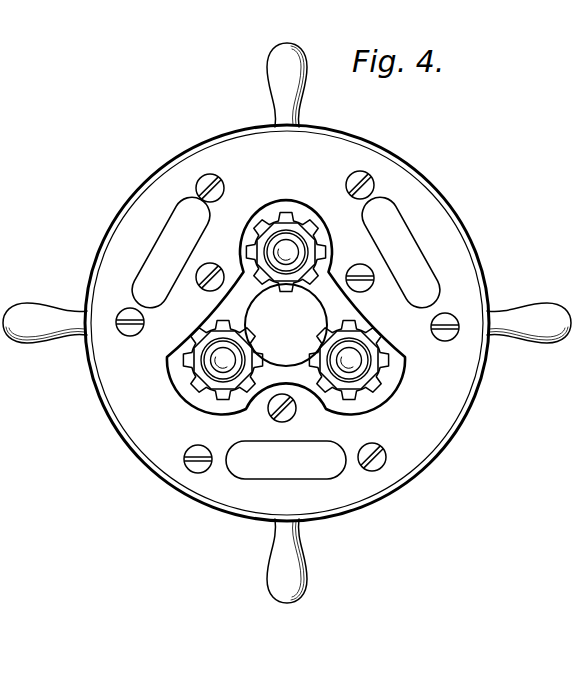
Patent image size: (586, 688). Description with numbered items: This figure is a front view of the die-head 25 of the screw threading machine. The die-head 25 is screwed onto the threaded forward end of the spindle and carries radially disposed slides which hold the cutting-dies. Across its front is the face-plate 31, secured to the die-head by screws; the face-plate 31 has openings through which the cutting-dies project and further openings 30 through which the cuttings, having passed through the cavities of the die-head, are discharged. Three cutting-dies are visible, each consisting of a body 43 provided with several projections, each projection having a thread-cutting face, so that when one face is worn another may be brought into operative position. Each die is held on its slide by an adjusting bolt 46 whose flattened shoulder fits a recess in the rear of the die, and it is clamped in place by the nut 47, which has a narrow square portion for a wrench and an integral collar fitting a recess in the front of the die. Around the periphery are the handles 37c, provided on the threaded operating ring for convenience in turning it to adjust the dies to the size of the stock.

The die-head 25 is at (337, 308).
The openings 30 is at (165, 245).
The face-plate 31 is at (448, 423).
The handles 37c is at (275, 86).
The body of the die 43 is at (305, 230).
The adjusting bolt 46 is at (270, 245).
The nut 47 is at (313, 250).